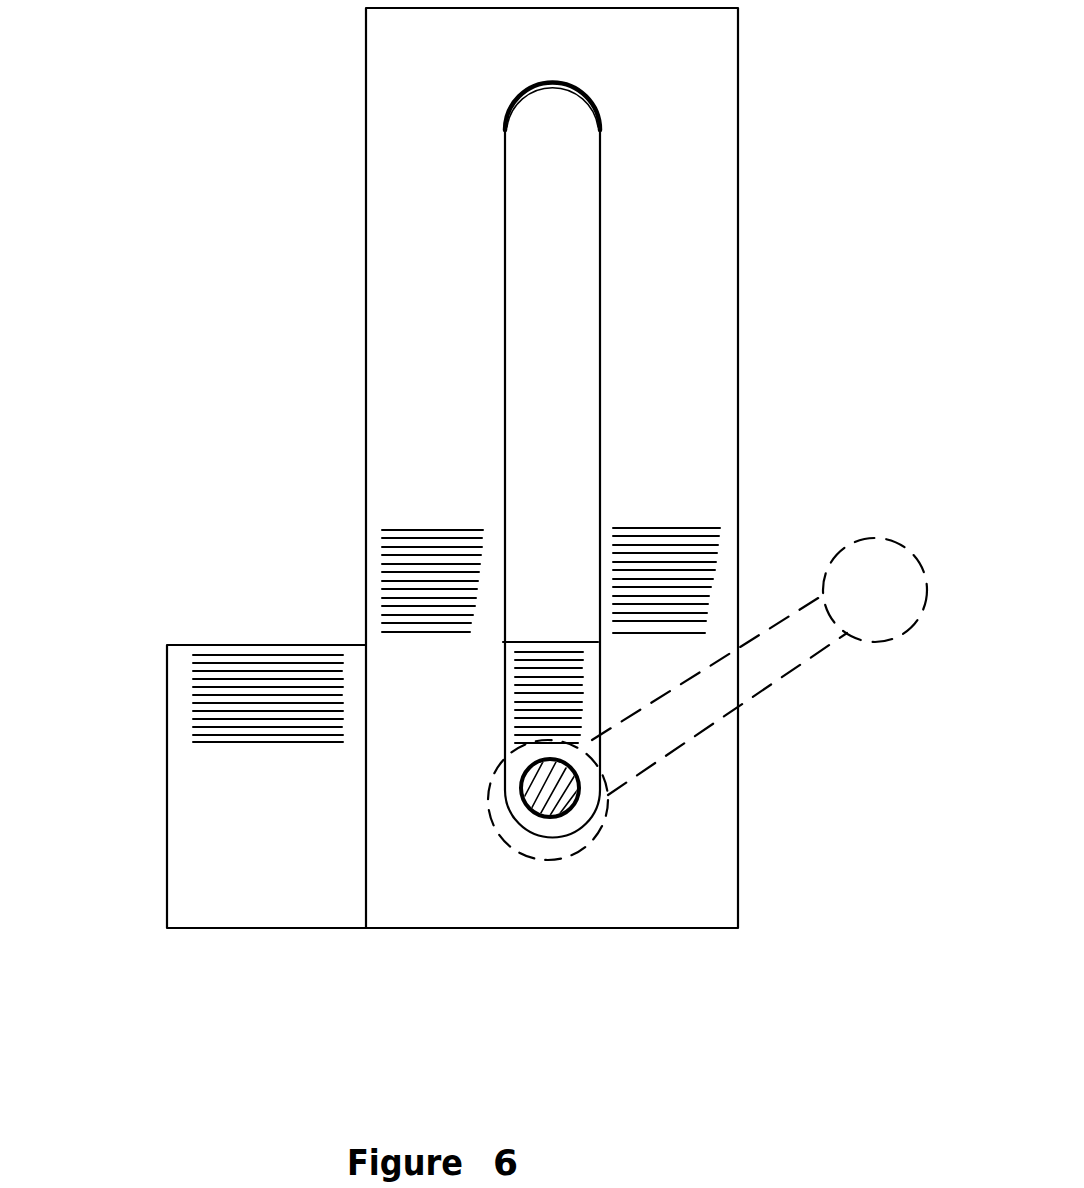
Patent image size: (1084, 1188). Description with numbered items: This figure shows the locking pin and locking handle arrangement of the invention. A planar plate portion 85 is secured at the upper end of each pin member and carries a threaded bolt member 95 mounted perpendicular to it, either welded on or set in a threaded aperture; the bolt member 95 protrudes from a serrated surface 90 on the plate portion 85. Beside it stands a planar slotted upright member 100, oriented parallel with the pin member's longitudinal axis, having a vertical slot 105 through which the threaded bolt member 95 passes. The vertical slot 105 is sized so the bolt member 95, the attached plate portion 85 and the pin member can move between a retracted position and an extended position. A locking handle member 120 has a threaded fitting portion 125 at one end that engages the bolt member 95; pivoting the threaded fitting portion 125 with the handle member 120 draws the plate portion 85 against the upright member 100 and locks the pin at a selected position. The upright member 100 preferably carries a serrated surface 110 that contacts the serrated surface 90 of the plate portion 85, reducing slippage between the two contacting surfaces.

The plate portion 85 is at (187, 800).
The serrated surface 90 is at (272, 685).
The threaded bolt member 95 is at (568, 813).
The slotted upright member 100 is at (715, 98).
The vertical slot 105 is at (537, 277).
The serrated surface 110 is at (423, 523).
The locking handle member 120 is at (783, 685).
The threaded fitting portion 125 is at (483, 815).